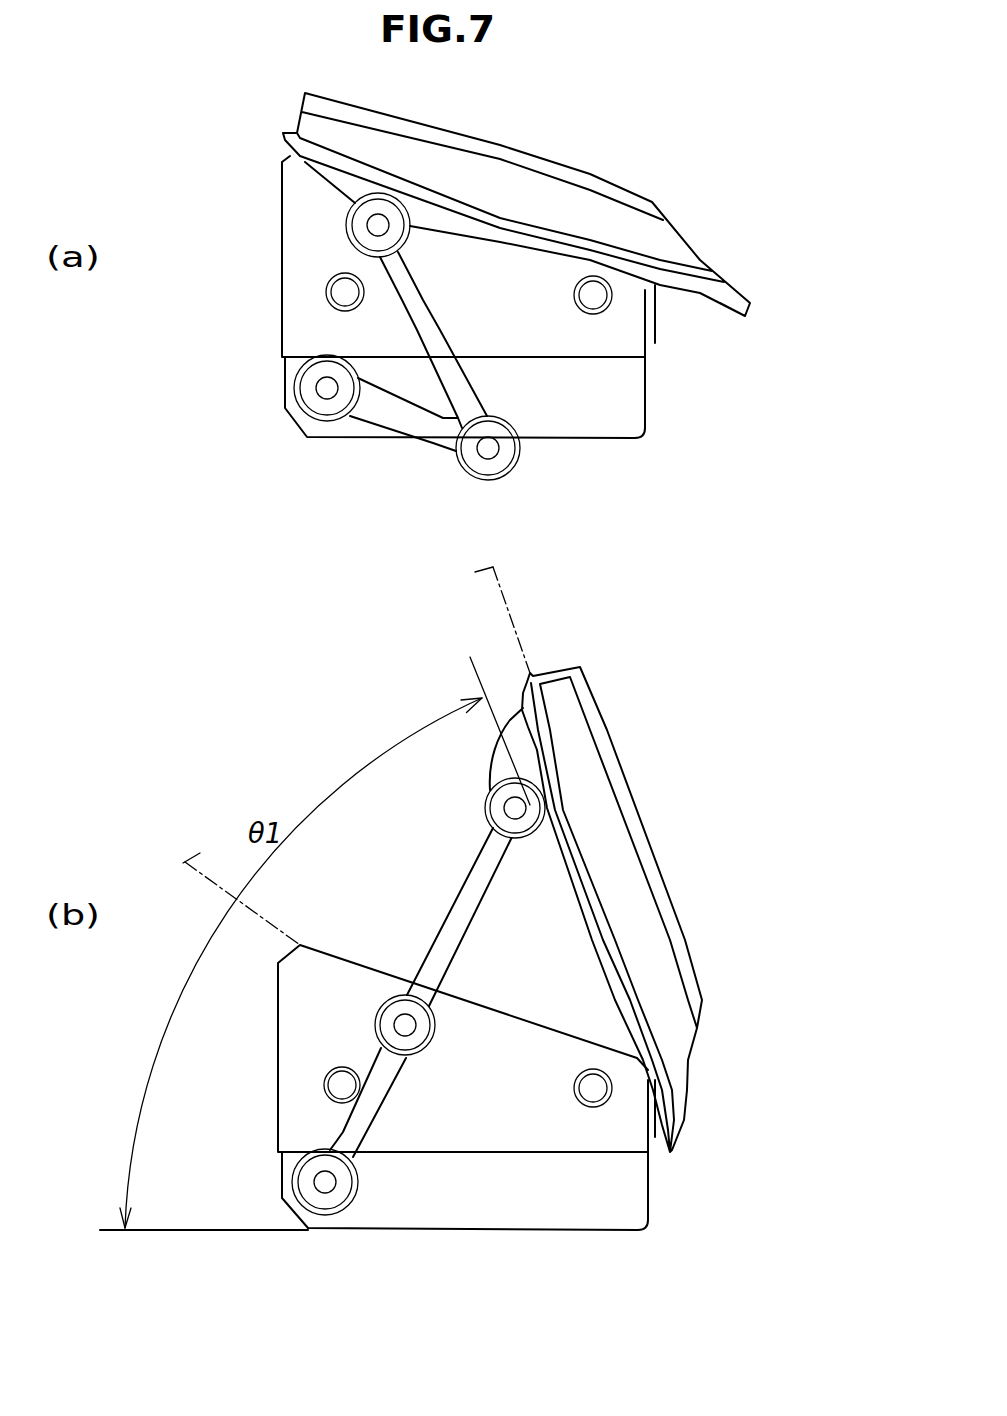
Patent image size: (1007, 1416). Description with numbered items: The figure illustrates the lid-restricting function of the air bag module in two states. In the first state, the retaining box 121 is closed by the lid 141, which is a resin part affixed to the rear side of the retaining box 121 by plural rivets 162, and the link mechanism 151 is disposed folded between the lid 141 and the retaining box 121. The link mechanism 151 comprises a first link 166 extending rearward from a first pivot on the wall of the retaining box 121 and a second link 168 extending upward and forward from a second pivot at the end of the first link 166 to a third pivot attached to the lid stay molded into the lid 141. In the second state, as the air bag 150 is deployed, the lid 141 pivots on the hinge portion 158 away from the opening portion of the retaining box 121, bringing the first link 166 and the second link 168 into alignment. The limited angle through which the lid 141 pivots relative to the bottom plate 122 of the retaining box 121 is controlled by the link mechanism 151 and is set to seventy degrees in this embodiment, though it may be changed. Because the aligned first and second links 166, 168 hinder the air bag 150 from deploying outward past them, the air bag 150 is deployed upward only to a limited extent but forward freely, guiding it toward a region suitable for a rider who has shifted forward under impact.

The retaining box 121 is at (617, 405).
The bottom plate 122 is at (573, 1235).
The lid 141 is at (555, 197).
The air bag 150 is at (522, 620).
The left link mechanism 151 is at (407, 456).
The hinge portion 158 is at (655, 1080).
The rivets 162 is at (342, 293).
The first link 166 is at (433, 430).
The second link 168 is at (463, 390).